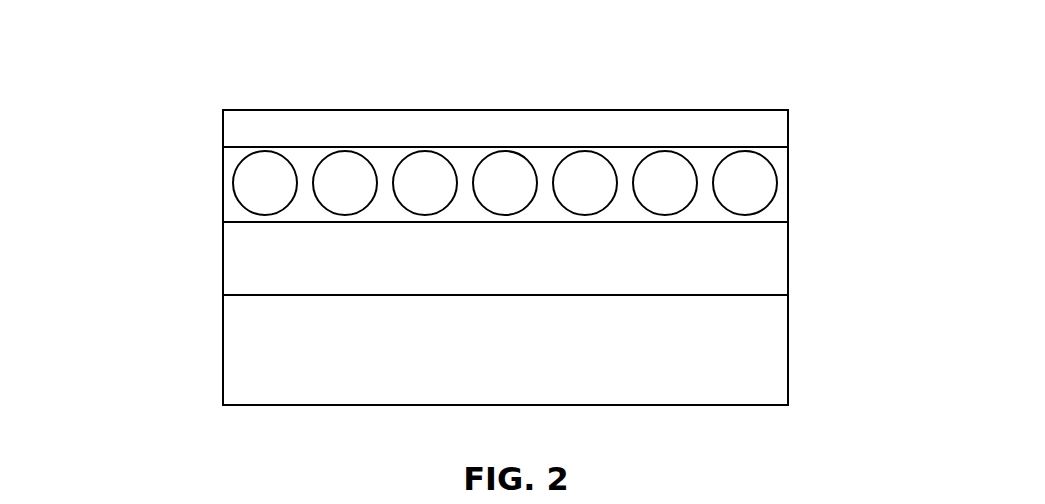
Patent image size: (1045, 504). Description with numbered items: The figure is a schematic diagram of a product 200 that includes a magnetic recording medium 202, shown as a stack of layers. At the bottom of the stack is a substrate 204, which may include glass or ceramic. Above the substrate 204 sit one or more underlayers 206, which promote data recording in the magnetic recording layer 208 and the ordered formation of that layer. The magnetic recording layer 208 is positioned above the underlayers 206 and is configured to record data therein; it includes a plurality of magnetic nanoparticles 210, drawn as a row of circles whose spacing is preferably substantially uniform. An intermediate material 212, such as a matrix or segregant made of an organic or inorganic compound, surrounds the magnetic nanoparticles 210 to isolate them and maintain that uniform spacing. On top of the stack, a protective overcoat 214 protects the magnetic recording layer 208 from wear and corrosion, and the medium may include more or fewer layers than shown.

The product 200 is at (121, 30).
The magnetic recording medium 202 is at (845, 254).
The substrate 204 is at (484, 361).
The underlayers 206 is at (484, 268).
The magnetic recording layer 208 is at (223, 186).
The magnetic nanoparticles 210 is at (766, 195).
The intermediate material 212 is at (777, 155).
The protective overcoat 214 is at (484, 140).